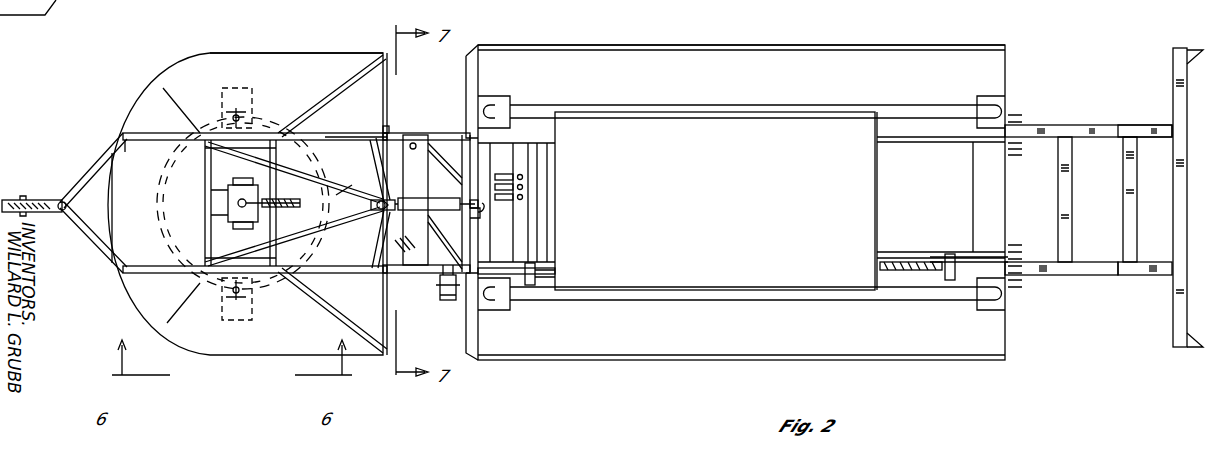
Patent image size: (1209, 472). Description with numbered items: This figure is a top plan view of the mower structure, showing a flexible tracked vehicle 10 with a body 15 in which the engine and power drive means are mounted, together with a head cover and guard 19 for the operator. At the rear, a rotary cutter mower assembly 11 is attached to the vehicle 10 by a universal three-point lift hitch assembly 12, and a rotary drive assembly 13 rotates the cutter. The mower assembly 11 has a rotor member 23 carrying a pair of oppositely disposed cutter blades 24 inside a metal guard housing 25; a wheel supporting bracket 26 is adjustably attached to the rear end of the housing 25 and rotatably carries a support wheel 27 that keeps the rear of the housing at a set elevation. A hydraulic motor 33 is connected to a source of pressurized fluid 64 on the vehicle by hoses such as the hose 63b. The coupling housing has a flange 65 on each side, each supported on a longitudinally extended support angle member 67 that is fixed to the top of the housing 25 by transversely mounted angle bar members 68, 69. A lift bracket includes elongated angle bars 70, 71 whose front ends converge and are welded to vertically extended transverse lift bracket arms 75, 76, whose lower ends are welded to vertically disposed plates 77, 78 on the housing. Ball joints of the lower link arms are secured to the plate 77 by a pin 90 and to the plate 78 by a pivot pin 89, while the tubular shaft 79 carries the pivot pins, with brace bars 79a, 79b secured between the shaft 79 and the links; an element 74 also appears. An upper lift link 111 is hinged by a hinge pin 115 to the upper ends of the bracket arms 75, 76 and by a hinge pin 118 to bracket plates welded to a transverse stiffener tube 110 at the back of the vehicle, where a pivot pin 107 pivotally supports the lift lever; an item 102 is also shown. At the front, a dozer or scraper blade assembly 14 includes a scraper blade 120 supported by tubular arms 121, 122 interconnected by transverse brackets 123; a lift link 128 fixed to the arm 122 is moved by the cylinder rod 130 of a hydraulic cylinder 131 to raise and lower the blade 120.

The flexible tracked vehicle 10 is at (838, 38).
The rotary cutter mower assembly 11 is at (227, 40).
The universal three-point lift hitch assembly 12 is at (445, 124).
The rotary drive assembly 13 is at (208, 209).
The dozer or scraper blade assembly 14 is at (1068, 114).
The body of the vehicle 15 is at (732, 50).
The head cover and guard 19 is at (796, 112).
The rotor member 23 is at (303, 108).
The cutter blades 24 is at (240, 88).
The guard housing 25 is at (297, 52).
The wheel supporting bracket 26 is at (80, 192).
The support wheel 27 is at (38, 198).
The hydraulic motor 33 is at (216, 188).
The hydraulic connecting hose 63b is at (289, 209).
The source of hydraulic pressurized fluid 64 is at (512, 146).
The flange 65 is at (262, 160).
The support angle member 67 is at (228, 185).
The transversely mounted angle bar member 68 is at (200, 165).
The transversely mounted angle bar member 69 is at (272, 253).
The elongated angle bar 70 is at (350, 222).
The elongated angle bar 71 is at (348, 190).
The slanted upright 74 is at (380, 160).
The lift bracket arm 75 is at (380, 160).
The lift bracket arm 76 is at (370, 268).
The vertically disposed plate 77 is at (336, 268).
The vertically disposed plate 78 is at (348, 137).
The tubular shaft 79 is at (428, 188).
The brace bar 79a is at (434, 186).
The brace bar 79b is at (436, 216).
The pivot pin 89 is at (390, 130).
The pin 90 is at (378, 290).
The bolt 102 is at (530, 287).
The pivot pin 107 is at (442, 292).
The transverse stiffener tube 110 is at (468, 62).
The upper lift link 111 is at (414, 228).
The hinge pin 115 is at (373, 215).
The hinge pin 118 is at (480, 218).
The scraper blade 120 is at (1170, 216).
The tubular arm 121 is at (1130, 124).
The tubular arm 122 is at (1138, 276).
The bracket 123 is at (1122, 212).
The lift link 128 is at (1086, 270).
The cylinder rod 130 is at (962, 258).
The hydraulic cylinder 131 is at (910, 292).